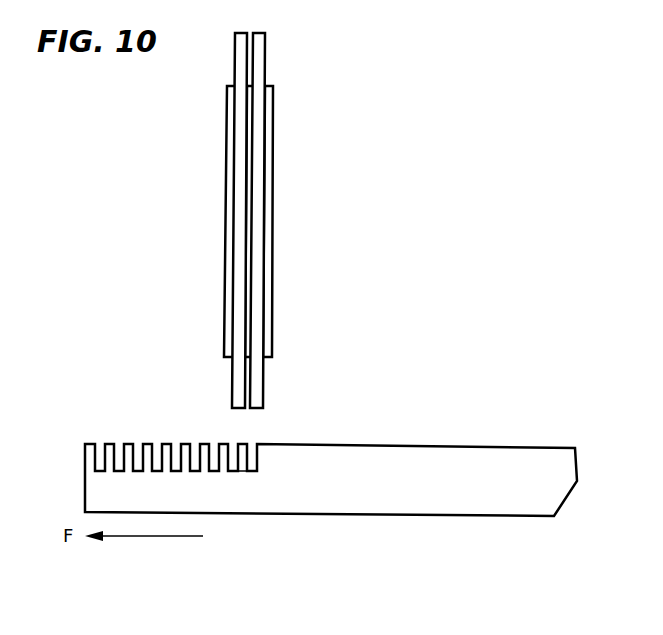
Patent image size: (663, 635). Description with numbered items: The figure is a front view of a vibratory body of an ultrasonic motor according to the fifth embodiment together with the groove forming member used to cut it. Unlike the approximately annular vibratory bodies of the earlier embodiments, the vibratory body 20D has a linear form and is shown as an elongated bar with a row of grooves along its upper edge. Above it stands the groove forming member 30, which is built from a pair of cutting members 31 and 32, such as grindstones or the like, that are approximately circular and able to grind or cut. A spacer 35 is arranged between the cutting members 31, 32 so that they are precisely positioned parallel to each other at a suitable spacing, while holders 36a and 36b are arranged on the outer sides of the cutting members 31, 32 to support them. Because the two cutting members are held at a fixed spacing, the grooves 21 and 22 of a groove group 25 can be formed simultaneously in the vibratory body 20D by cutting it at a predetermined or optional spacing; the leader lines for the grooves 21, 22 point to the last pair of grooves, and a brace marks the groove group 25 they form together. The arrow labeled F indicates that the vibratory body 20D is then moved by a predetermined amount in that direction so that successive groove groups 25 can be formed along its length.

The groove forming member 30 is at (250, 229).
The cutting member 31 is at (238, 382).
The cutting member 32 is at (262, 395).
The spacer 35 is at (247, 135).
The holder 36a is at (232, 286).
The holder 36b is at (277, 298).
The vibratory body 20D is at (331, 521).
The groove 21 is at (233, 472).
The groove 22 is at (257, 472).
The groove group 25 is at (222, 557).